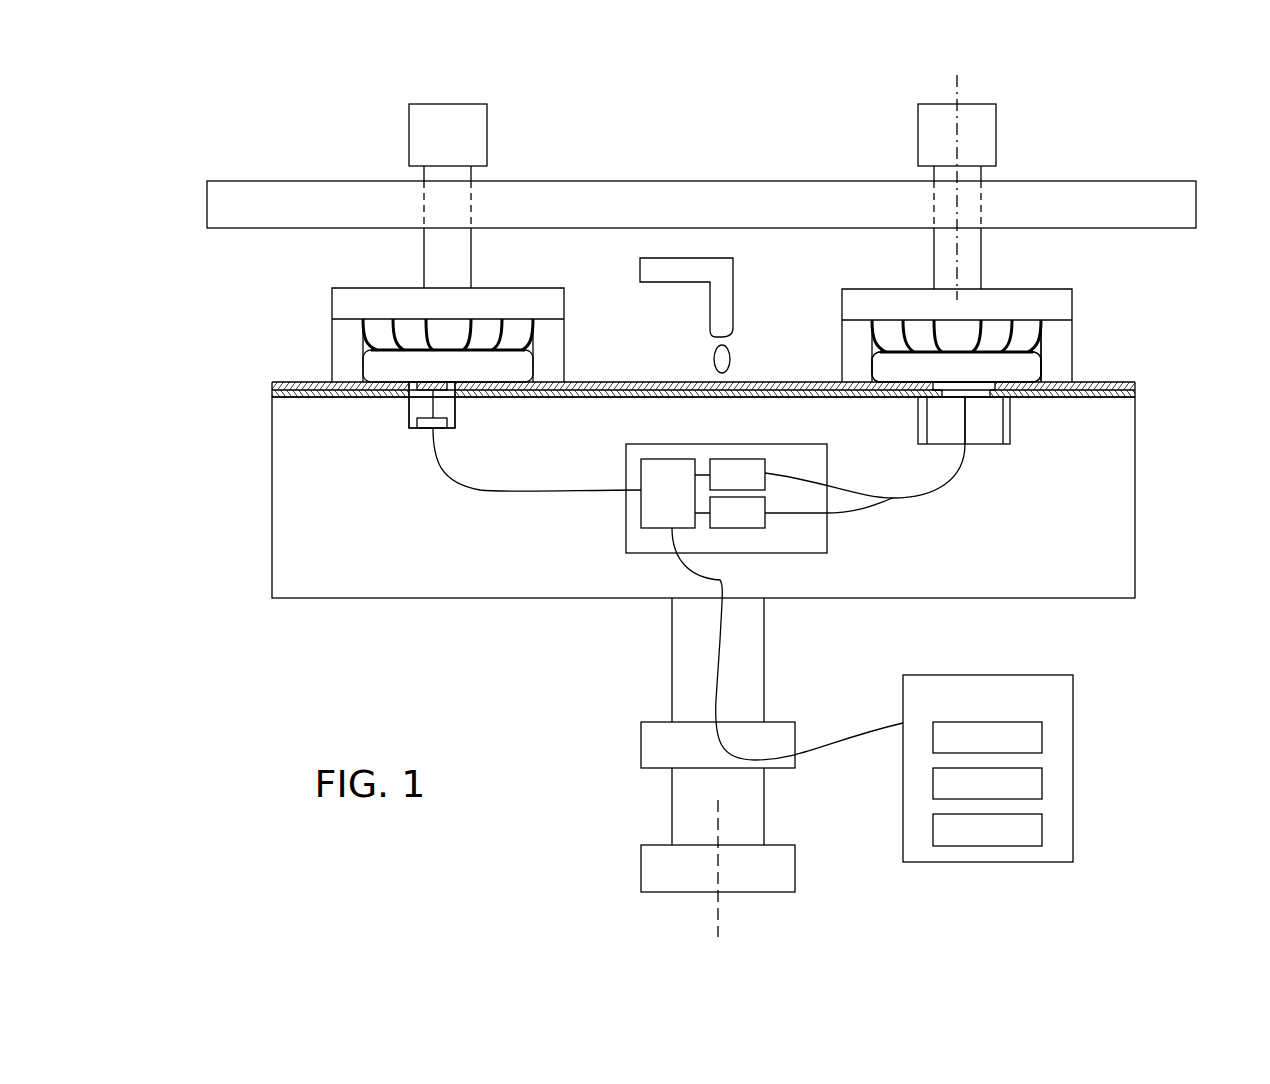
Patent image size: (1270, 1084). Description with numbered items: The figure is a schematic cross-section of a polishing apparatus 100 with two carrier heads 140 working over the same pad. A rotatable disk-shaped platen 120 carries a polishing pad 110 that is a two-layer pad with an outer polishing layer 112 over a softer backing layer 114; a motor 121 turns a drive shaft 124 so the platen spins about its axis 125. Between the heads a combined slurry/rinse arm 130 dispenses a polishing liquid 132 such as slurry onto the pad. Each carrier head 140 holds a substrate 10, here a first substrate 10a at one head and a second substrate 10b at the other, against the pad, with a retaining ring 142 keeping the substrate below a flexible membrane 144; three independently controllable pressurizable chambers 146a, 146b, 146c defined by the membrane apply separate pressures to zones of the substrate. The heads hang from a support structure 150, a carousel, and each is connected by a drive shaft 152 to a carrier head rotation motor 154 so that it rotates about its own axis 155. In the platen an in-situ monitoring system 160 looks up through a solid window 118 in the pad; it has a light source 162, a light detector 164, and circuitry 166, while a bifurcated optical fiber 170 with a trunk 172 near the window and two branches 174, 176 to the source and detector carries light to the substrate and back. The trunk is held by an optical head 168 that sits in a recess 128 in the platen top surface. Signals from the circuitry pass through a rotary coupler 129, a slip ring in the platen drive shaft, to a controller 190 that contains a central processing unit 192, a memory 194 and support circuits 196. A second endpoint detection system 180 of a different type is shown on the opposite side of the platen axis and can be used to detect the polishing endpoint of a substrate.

The polishing apparatus 100 is at (262, 145).
The polishing pad 110 is at (1121, 378).
The outer polishing layer 112 is at (1135, 386).
The backing layer 114 is at (1135, 393).
The solid window 118 is at (975, 397).
The platen 120 is at (1135, 523).
The motor 121 is at (795, 875).
The drive shaft 124 is at (764, 668).
The axis 125 is at (720, 918).
The recess 128 is at (918, 425).
The rotary coupler 129 is at (455, 408).
The slurry/rinse arm 130 is at (710, 300).
The polishing liquid 132 is at (714, 357).
The carrier head 140 is at (316, 335).
The retaining ring 142 is at (1072, 353).
The flexible membrane 144 is at (1013, 353).
The first pressurizable chamber 146a is at (960, 337).
The second pressurizable chamber 146b is at (997, 337).
The third pressurizable chamber 146c is at (1027, 335).
The support structure 150 is at (1165, 182).
The drive shaft 152 is at (945, 268).
The carrier head rotation motor 154 is at (918, 148).
The axis 155 is at (958, 85).
The in-situ monitoring system 160 is at (604, 539).
The light source 162 is at (737, 474).
The light detector 164 is at (737, 512).
The circuitry 166 is at (675, 493).
The optical head 168 is at (1005, 428).
The bifurcated optical fiber 170 is at (915, 502).
The trunk 172 is at (938, 497).
The branch 174 is at (792, 480).
The branch 176 is at (788, 514).
The endpoint detection system 180 is at (396, 417).
The controller 190 is at (1073, 708).
The central processing unit 192 is at (1042, 735).
The memory 194 is at (1042, 782).
The support circuits 196 is at (1042, 828).
The substrate 10 is at (956, 351).
The first substrate 10a is at (956, 367).
The second substrate 10b is at (448, 350).